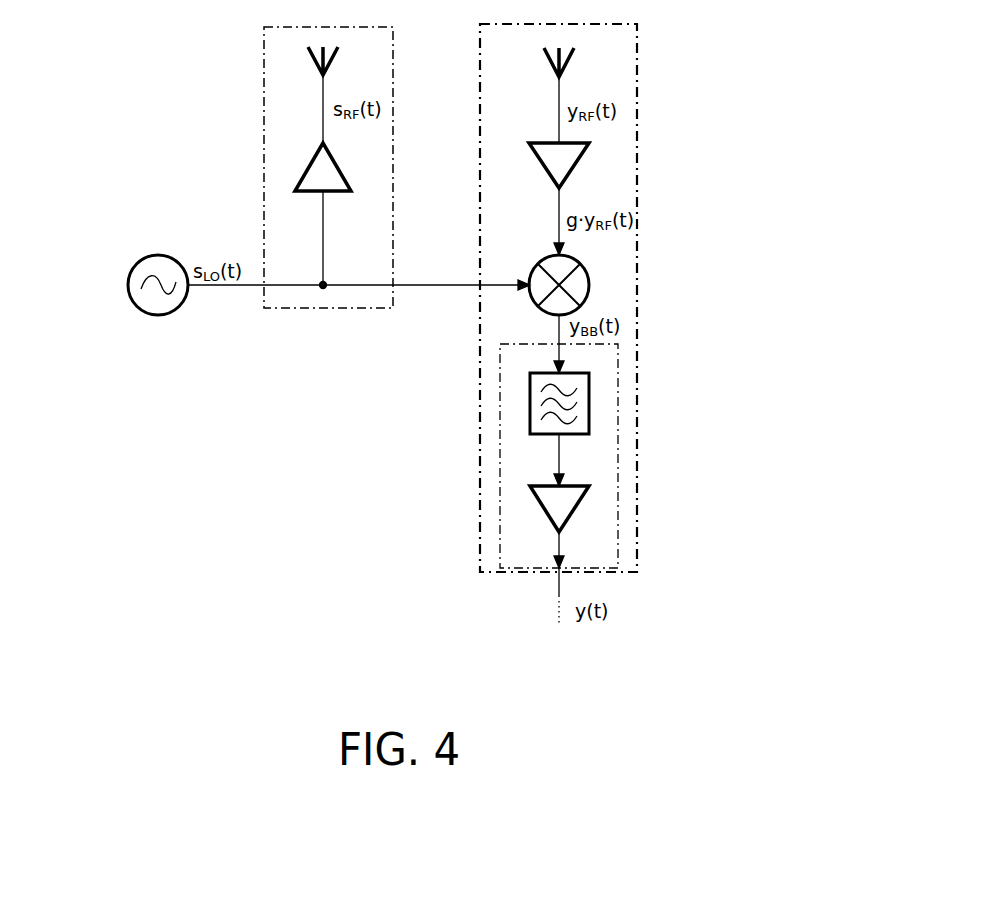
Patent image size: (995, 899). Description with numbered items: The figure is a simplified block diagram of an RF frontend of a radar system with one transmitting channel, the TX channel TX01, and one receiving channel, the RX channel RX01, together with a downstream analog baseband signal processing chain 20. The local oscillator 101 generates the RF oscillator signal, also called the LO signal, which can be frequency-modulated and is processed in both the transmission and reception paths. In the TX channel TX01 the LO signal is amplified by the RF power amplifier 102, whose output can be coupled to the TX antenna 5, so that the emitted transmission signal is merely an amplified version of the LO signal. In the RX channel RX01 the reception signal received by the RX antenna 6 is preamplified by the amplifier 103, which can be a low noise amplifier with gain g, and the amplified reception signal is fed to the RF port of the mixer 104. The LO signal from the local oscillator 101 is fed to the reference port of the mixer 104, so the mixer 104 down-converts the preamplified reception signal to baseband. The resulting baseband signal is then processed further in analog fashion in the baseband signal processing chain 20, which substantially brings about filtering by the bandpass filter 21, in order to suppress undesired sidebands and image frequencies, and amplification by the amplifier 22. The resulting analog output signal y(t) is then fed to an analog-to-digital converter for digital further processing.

The TX antenna 5 is at (318, 72).
The RF power amplifier 102 is at (293, 170).
The local oscillator 101 is at (158, 315).
The TX channel TX01 is at (344, 167).
The RX channel RX01 is at (544, 298).
The RX antenna 6 is at (567, 63).
The amplifier 103 is at (578, 158).
The mixer 104 is at (590, 280).
The baseband signal processing chain 20 is at (618, 428).
The bandpass filter 21 is at (530, 407).
The amplifier 22 is at (540, 510).